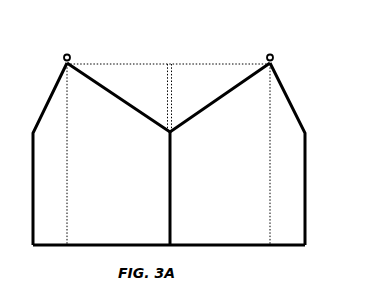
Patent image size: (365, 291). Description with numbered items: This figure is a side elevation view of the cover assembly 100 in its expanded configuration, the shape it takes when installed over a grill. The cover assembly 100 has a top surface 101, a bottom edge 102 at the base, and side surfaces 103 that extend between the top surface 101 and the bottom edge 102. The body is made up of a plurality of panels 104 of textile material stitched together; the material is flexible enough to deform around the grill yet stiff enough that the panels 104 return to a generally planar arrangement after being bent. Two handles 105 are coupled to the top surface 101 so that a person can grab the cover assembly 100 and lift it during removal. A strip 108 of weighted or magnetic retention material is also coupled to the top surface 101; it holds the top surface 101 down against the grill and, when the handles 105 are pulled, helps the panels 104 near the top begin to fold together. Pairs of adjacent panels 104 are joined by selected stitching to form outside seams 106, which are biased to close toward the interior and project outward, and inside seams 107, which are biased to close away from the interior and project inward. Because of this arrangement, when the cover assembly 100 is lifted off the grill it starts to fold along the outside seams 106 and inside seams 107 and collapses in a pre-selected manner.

The cover assembly 100 is at (109, 42).
The top surface 101 is at (189, 63).
The bottom edge 102 is at (256, 246).
The side surfaces 103 is at (197, 179).
The panels 104 is at (149, 78).
The handles 105 is at (64, 58).
The outside seams 106 is at (40, 118).
The inside seams 107 is at (180, 82).
The strip 108 is at (166, 89).